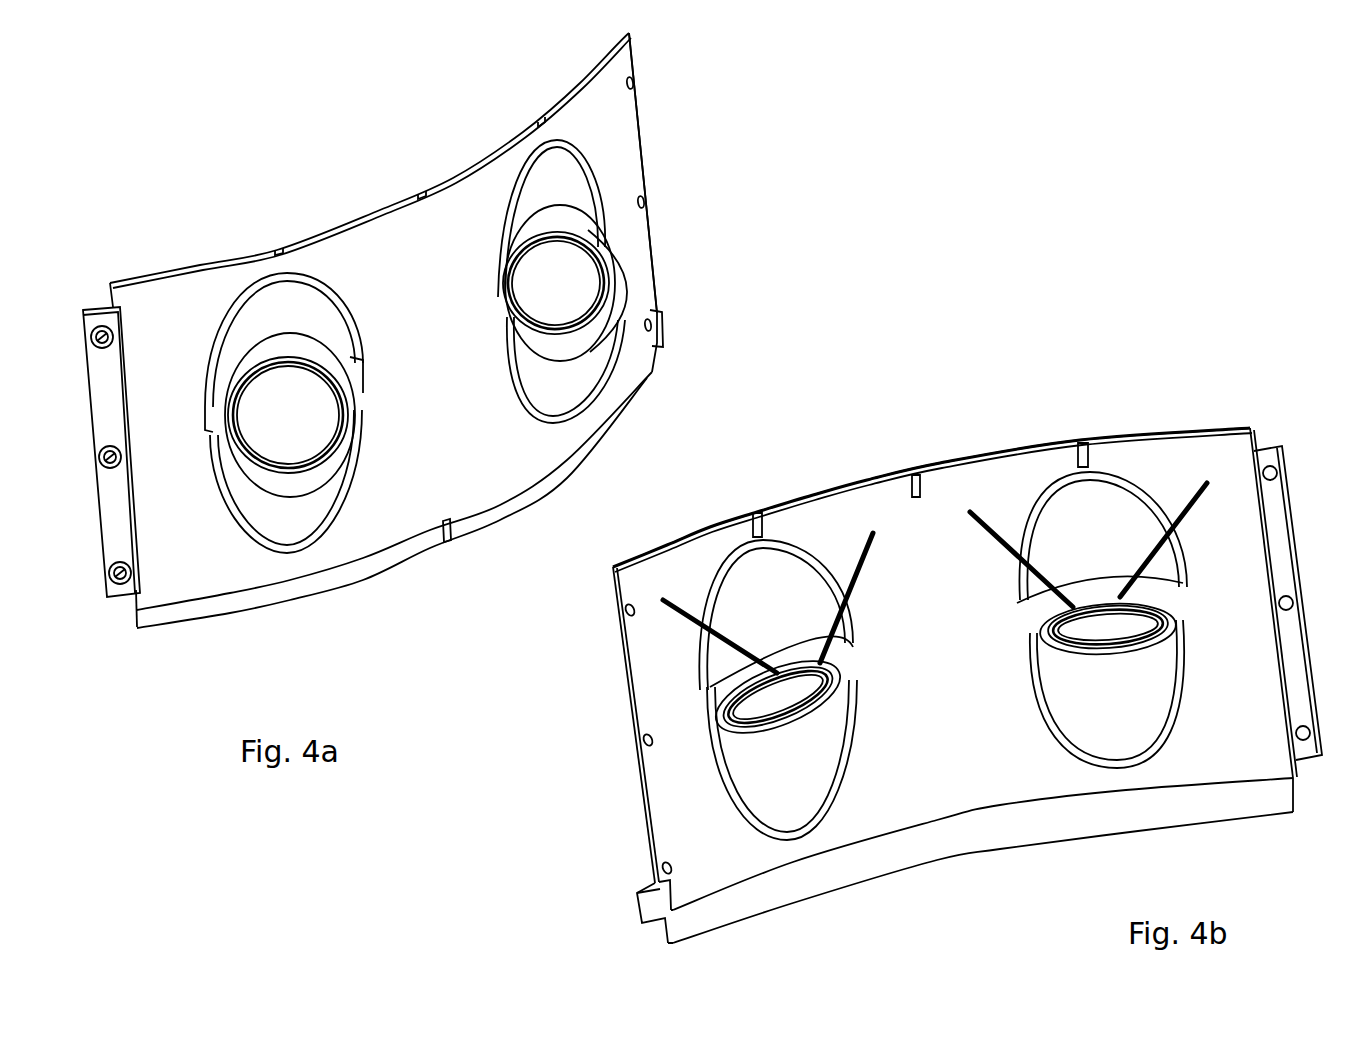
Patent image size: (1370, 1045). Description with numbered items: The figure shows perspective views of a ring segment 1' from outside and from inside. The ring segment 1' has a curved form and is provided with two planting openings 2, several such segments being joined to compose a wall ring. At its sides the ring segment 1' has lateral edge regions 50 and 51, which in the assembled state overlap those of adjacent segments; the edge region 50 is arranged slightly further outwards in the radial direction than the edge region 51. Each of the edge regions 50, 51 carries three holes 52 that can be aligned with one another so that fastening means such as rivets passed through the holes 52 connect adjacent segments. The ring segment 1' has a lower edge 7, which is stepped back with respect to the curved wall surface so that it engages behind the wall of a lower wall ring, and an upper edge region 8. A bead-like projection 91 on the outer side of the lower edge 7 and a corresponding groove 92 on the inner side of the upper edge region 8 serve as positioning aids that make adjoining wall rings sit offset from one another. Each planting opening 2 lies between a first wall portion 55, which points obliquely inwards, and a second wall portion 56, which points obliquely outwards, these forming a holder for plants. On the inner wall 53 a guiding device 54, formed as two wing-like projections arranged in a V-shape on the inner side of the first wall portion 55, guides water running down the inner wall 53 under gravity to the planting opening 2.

In FIG. 4A, the ring segment 1' is at (383, 330).
In FIG. 4B, the ring segment 1' is at (932, 685).
In FIG. 4A, the planting opening 2 is at (275, 393).
In FIG. 4B, the planting opening 2 is at (797, 685).
In FIG. 4A, the lower edge 7 is at (353, 570).
In FIG. 4B, the lower edge 7 is at (1000, 832).
In FIG. 4A, the upper edge region 8 is at (455, 188).
In FIG. 4B, the upper edge region 8 is at (893, 492).
In FIG. 4A, the lateral edge region 50 is at (115, 540).
In FIG. 4B, the lateral edge region 50 is at (1282, 560).
In FIG. 4A, the lateral edge region 51 is at (642, 270).
In FIG. 4B, the lateral edge region 51 is at (648, 703).
In FIG. 4A, the hole 52 is at (102, 333).
In FIG. 4B, the hole 52 is at (622, 622).
In FIG. 4B, the inner wall 53 is at (963, 480).
In FIG. 4B, the guiding device 54 is at (840, 600).
In FIG. 4A, the first wall portion 55 is at (298, 305).
In FIG. 4B, the first wall portion 55 is at (755, 597).
In FIG. 4A, the second wall portion 56 is at (288, 517).
In FIG. 4B, the second wall portion 56 is at (788, 782).
In FIG. 4A, the bead-like projection 91 is at (447, 525).
In FIG. 4B, the groove 92 is at (757, 537).